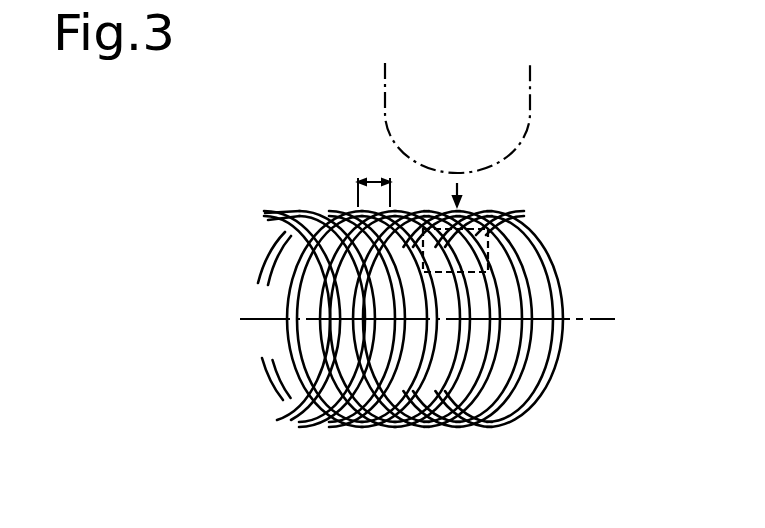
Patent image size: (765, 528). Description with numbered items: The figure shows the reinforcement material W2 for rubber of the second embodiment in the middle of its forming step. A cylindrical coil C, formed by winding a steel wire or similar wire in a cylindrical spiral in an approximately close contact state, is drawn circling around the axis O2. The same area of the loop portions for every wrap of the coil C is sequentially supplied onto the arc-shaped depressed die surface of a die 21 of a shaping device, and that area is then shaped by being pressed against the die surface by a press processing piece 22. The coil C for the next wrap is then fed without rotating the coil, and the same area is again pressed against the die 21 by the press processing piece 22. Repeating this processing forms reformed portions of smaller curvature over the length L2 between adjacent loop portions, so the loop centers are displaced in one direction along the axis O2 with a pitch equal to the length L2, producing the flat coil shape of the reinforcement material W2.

The cylindrical coil C is at (535, 390).
The die 21 is at (492, 240).
The press processing piece 22 is at (531, 88).
The axis O2 is at (447, 318).
The reinforcement material W2 is at (352, 430).
The length of reformed portion L2 is at (374, 180).